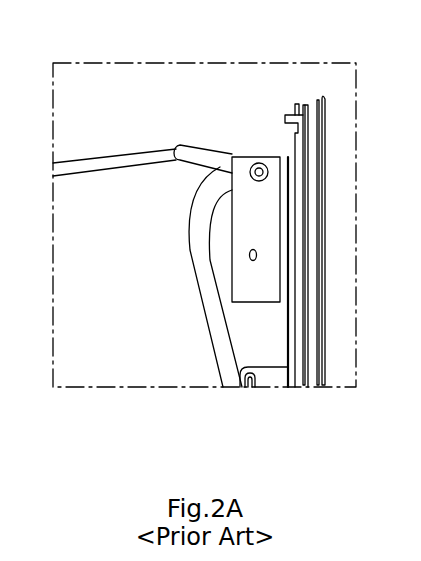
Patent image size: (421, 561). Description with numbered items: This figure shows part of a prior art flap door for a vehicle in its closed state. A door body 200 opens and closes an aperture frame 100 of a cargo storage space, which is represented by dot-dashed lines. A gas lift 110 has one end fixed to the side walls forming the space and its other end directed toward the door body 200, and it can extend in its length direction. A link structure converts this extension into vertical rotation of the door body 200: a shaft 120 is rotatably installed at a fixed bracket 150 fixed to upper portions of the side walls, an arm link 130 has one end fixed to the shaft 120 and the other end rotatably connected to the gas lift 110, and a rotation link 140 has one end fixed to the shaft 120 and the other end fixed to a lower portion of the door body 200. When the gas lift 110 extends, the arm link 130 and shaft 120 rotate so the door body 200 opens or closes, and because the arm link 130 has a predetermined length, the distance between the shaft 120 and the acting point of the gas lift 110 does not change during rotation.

The aperture frame 100 is at (306, 104).
The gas lift 110 is at (98, 157).
The shaft 120 is at (261, 162).
The arm link 130 is at (200, 152).
The rotation link 140 is at (190, 243).
The fixed bracket 150 is at (242, 280).
The door body 200 is at (288, 157).